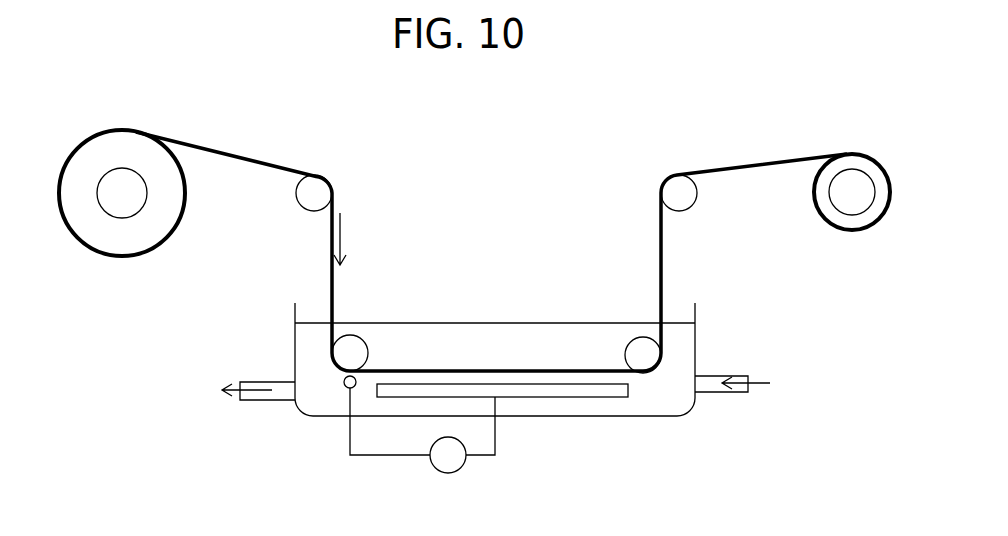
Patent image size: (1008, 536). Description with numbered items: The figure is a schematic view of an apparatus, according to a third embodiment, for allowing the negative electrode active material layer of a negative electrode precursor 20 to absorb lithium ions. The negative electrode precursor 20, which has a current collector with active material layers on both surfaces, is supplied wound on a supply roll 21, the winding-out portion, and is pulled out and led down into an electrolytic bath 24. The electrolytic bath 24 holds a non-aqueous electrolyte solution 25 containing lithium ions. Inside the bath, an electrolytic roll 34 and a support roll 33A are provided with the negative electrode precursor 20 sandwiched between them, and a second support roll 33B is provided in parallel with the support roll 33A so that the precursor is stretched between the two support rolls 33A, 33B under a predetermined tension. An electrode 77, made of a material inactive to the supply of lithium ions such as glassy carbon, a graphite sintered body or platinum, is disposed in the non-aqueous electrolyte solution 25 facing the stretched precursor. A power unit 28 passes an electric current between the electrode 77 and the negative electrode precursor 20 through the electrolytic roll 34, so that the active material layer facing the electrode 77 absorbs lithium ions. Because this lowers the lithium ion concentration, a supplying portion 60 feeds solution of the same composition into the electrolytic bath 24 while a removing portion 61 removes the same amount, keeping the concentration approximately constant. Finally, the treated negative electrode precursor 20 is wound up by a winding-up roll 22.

The negative electrode precursor 20 is at (262, 158).
The supply roll 21 is at (137, 188).
The winding-up roll 22 is at (841, 181).
The electrolytic bath 24 is at (692, 407).
The non-aqueous electrolyte solution 25 is at (635, 405).
The power unit 28 is at (430, 465).
The support roll 33A is at (347, 351).
The support roll 33B is at (648, 357).
The electrolytic roll 34 is at (346, 387).
The supplying portion 60 is at (749, 377).
The removing portion 61 is at (240, 382).
The electrode 77 is at (503, 388).